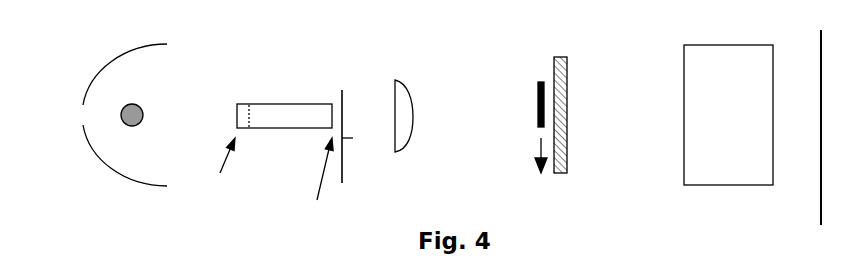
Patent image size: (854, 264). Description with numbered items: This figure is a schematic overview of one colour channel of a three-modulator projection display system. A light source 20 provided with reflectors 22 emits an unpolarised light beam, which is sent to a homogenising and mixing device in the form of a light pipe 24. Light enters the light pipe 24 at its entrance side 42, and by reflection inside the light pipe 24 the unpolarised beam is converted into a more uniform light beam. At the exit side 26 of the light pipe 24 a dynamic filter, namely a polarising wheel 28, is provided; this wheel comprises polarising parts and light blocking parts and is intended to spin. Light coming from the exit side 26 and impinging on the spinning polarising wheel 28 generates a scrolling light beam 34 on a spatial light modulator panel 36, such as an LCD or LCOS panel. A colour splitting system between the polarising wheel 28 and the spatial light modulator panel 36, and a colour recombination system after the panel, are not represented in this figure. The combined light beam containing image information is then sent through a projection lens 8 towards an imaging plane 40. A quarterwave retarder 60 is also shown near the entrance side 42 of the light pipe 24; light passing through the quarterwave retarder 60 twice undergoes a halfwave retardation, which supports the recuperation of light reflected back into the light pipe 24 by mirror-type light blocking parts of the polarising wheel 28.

The projection lens 8 is at (718, 165).
The light source 20 is at (137, 110).
The reflectors 22 is at (107, 63).
The light pipe 24 is at (264, 111).
The exit side 26 is at (320, 187).
The polarising wheel 28 is at (343, 96).
The scrolling light beam 34 is at (536, 95).
The spatial light modulator panel 36 is at (563, 78).
The imaging plane 40 is at (820, 198).
The entrance side 42 is at (220, 172).
The quarterwave retarder 60 is at (243, 107).